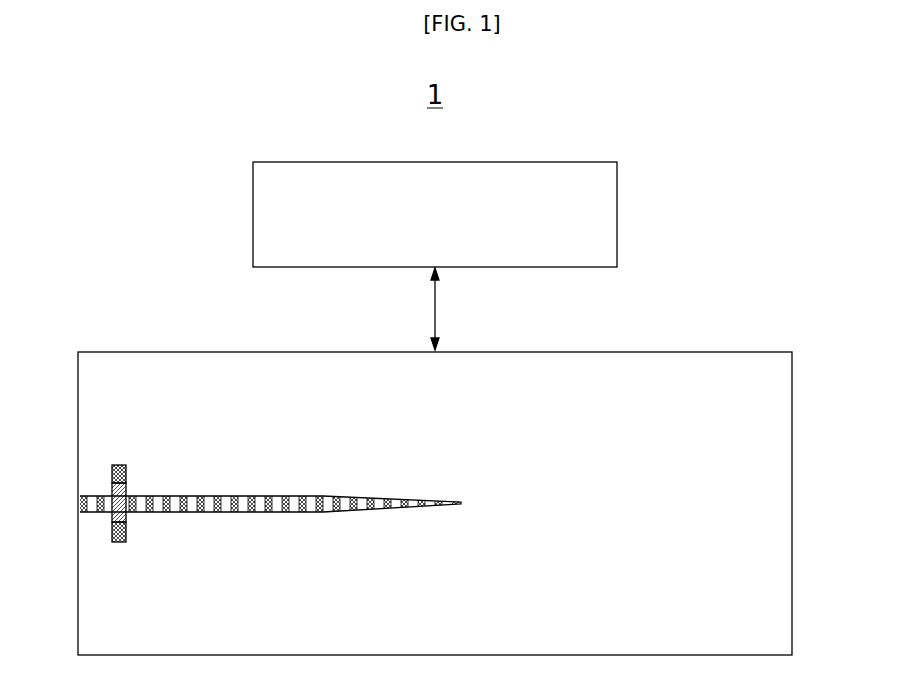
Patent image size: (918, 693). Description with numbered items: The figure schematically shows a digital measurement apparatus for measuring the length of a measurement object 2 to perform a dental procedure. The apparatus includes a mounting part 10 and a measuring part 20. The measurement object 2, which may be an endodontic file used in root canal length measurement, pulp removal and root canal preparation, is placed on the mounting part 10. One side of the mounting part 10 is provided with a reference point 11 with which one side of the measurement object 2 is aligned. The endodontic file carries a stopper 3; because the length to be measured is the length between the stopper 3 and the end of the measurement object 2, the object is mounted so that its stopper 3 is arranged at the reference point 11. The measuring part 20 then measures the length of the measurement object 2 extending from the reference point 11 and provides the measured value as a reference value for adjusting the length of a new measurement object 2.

The measurement object 2 is at (216, 513).
The stopper 3 is at (112, 490).
The mounting part 10 is at (793, 503).
The reference point 11 is at (74, 481).
The measuring part 20 is at (618, 213).